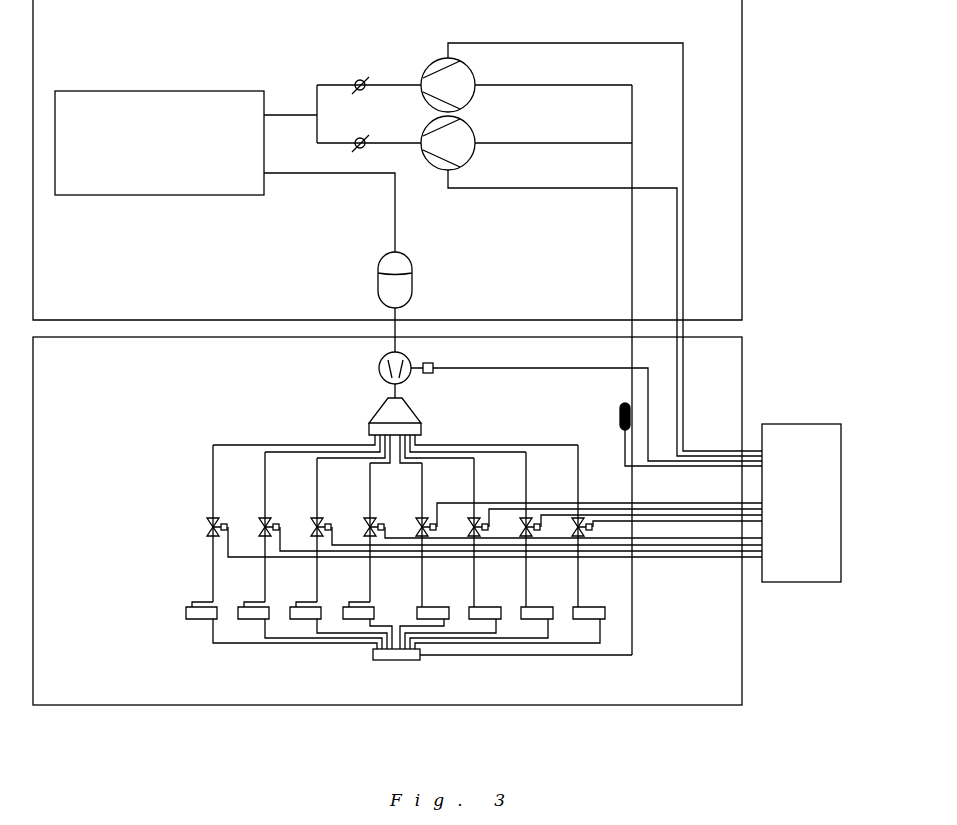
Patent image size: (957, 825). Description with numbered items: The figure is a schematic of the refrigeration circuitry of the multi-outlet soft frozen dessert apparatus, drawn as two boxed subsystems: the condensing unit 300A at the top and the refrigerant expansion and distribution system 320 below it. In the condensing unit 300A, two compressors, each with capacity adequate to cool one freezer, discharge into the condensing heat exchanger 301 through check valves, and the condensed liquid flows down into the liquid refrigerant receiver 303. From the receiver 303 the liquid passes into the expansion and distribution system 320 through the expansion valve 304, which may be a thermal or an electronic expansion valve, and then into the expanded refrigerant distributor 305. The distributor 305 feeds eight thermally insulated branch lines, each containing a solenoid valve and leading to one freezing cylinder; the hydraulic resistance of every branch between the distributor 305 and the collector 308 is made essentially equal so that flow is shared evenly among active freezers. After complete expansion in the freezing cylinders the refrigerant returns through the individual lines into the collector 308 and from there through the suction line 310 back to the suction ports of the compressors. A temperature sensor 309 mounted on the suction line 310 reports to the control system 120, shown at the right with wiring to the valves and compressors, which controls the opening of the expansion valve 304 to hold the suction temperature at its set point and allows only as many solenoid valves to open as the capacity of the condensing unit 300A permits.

The control system 120 is at (800, 483).
The condensing unit 300A is at (308, 293).
The condensing heat exchanger 301 is at (124, 178).
The liquid refrigerant receiver 303 is at (402, 265).
The expansion valve 304 is at (380, 372).
The refrigerant distributor 305 is at (410, 418).
The collector 308 is at (405, 660).
The temperature sensor 309 is at (618, 411).
The suction line 310 is at (633, 283).
The refrigerant expansion and distribution system 320 is at (122, 654).